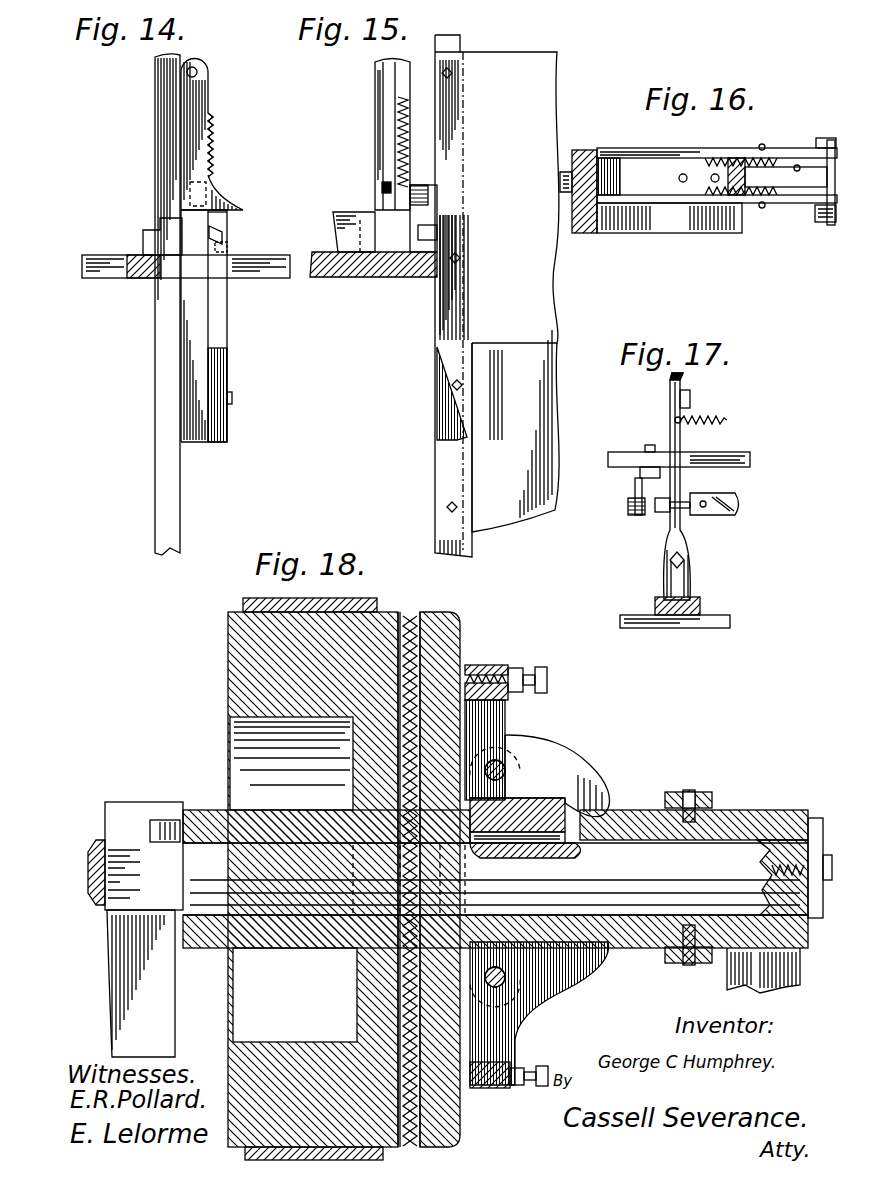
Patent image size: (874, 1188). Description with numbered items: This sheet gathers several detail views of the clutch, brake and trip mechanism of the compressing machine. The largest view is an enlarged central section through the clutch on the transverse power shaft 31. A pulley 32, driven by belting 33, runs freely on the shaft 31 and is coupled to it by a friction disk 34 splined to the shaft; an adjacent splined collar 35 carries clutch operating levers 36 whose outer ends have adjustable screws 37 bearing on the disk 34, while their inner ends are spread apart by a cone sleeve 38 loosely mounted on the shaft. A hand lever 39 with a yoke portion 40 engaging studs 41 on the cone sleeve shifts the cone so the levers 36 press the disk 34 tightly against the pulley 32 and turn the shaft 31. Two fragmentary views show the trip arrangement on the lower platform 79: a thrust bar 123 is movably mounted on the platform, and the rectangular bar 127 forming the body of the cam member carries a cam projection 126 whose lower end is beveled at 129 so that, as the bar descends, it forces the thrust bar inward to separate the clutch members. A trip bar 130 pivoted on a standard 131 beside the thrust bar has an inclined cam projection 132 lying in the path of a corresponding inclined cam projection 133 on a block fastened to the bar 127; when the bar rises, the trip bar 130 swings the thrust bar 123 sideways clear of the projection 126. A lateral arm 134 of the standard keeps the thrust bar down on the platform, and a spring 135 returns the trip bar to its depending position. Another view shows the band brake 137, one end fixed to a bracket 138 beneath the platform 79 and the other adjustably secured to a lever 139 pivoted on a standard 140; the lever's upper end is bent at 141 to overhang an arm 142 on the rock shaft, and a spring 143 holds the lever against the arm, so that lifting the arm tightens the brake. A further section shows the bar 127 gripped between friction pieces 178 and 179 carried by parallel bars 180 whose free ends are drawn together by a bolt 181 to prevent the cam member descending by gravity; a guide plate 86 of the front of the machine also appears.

In FIG. 18, the transverse power shaft 31 is at (92, 856).
In FIG. 18, the pulley 32 is at (252, 640).
In FIG. 18, the belting 33 is at (258, 603).
In FIG. 18, the friction disk 34 is at (445, 645).
In FIG. 18, the collar 35 is at (545, 808).
In FIG. 18, the clutch operating levers 36 is at (558, 760).
In FIG. 18, the adjustable screws 37 is at (495, 670).
In FIG. 18, the cone sleeve 38 is at (640, 806).
In FIG. 18, the hand lever 39 is at (712, 797).
In FIG. 18, the yoke portion 40 is at (670, 953).
In FIG. 18, the studs 41 is at (692, 958).
In FIG. 14, the platform 79 is at (131, 279).
In FIG. 15, the platform 79 is at (338, 279).
In FIG. 17, the platform 79 is at (748, 464).
In FIG. 16, the guide plate 86 is at (574, 226).
In FIG. 14, the thrust bar 123 is at (227, 221).
In FIG. 15, the thrust bar 123 is at (341, 220).
In FIG. 14, the cam projection 126 is at (195, 333).
In FIG. 15, the cam projection 126 is at (447, 318).
In FIG. 14, the rectangular bar 127 is at (172, 517).
In FIG. 15, the rectangular bar 127 is at (462, 548).
In FIG. 16, the rectangular bar 127 is at (746, 200).
In FIG. 14, the bevel 129 is at (218, 424).
In FIG. 15, the bevel 129 is at (447, 398).
In FIG. 14, the trip bar 130 is at (223, 233).
In FIG. 15, the trip bar 130 is at (405, 176).
In FIG. 15, the standard 131 is at (393, 88).
In FIG. 14, the inclined cam projection 132 is at (186, 191).
In FIG. 15, the inclined cam projection 132 is at (427, 194).
In FIG. 14, the inclined cam projection 133 is at (222, 249).
In FIG. 15, the inclined cam projection 133 is at (428, 232).
In FIG. 14, the lateral projecting arm 134 is at (228, 206).
In FIG. 15, the lateral projecting arm 134 is at (382, 186).
In FIG. 14, the spring 135 is at (213, 152).
In FIG. 15, the spring 135 is at (412, 125).
In FIG. 17, the band brake 137 is at (742, 512).
In FIG. 17, the bracket 138 is at (634, 492).
In FIG. 17, the lever 139 is at (688, 530).
In FIG. 17, the standard 140 is at (668, 582).
In FIG. 17, the bent end 141 is at (690, 380).
In FIG. 17, the arm 142 is at (692, 400).
In FIG. 17, the spring 143 is at (728, 421).
In FIG. 16, the friction piece 178 is at (790, 162).
In FIG. 16, the friction piece 179 is at (790, 196).
In FIG. 16, the parallel bars 180 is at (646, 150).
In FIG. 16, the bolt 181 is at (829, 172).